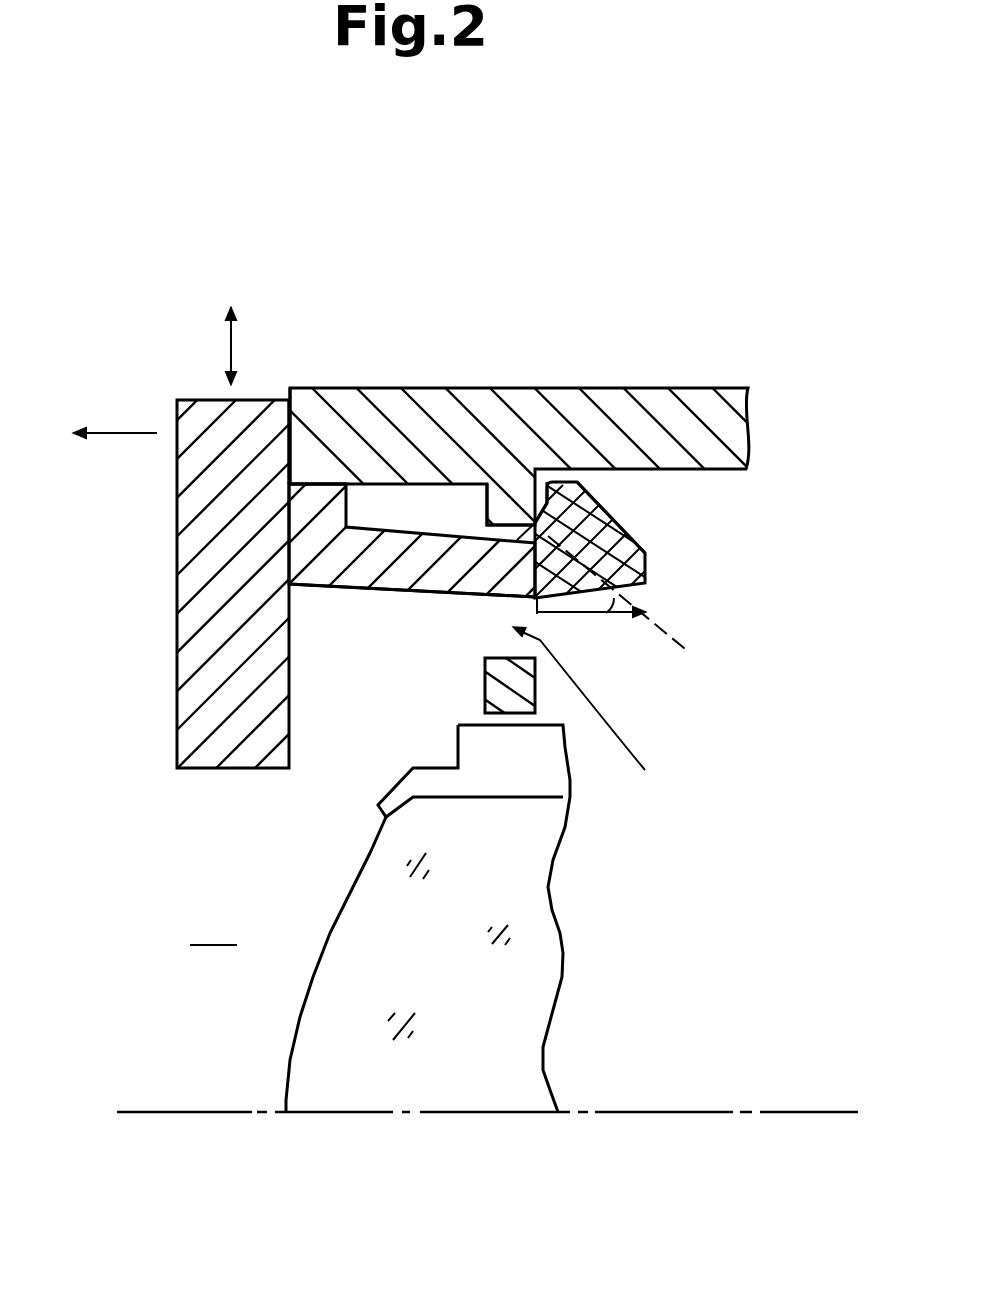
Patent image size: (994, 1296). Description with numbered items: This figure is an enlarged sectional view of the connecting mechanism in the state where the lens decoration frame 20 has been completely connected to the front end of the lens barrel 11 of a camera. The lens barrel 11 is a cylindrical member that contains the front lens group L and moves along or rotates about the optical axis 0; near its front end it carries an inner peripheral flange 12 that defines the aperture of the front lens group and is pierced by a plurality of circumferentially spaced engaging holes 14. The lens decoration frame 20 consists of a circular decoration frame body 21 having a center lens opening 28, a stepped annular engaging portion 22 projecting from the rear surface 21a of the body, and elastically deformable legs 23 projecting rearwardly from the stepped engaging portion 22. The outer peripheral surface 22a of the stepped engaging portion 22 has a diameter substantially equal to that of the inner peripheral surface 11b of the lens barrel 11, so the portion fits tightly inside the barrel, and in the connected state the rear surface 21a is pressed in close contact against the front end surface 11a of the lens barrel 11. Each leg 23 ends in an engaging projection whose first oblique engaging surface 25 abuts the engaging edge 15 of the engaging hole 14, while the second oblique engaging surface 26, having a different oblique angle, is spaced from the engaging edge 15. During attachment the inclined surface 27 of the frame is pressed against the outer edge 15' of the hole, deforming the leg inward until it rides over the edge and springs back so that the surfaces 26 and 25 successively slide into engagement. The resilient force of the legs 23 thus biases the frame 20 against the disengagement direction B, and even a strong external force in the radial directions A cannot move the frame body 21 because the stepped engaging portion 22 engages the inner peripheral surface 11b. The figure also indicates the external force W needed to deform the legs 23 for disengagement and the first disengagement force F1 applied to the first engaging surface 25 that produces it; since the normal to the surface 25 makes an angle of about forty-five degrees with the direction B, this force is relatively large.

The lens decoration frame 20 is at (340, 512).
The decoration frame body 21 is at (217, 525).
The rear surface 21a is at (310, 483).
The stepped annular engaging portion 22 is at (308, 490).
The outer peripheral surface 22a is at (333, 483).
The elastically deformable leg 23 is at (430, 575).
The lens barrel 11 is at (622, 423).
The front end surface 11a is at (288, 425).
The inner peripheral surface 11b is at (461, 486).
The engaging edge 15 is at (604, 542).
The outer edge of engaging hole 15' is at (537, 436).
The first oblique engaging surface 25 is at (535, 522).
The second oblique engaging surface 26 is at (545, 500).
The inclined surface 27 is at (535, 523).
The inner peripheral flange 12 is at (485, 690).
The engaging hole 14 is at (597, 707).
The external force W is at (512, 597).
The first disengagement force F1 is at (591, 624).
The radial directions A is at (232, 331).
The disengagement direction B is at (103, 436).
The front lens group L is at (535, 958).
The center lens opening 28 is at (213, 930).
The optical axis 0 is at (476, 1114).